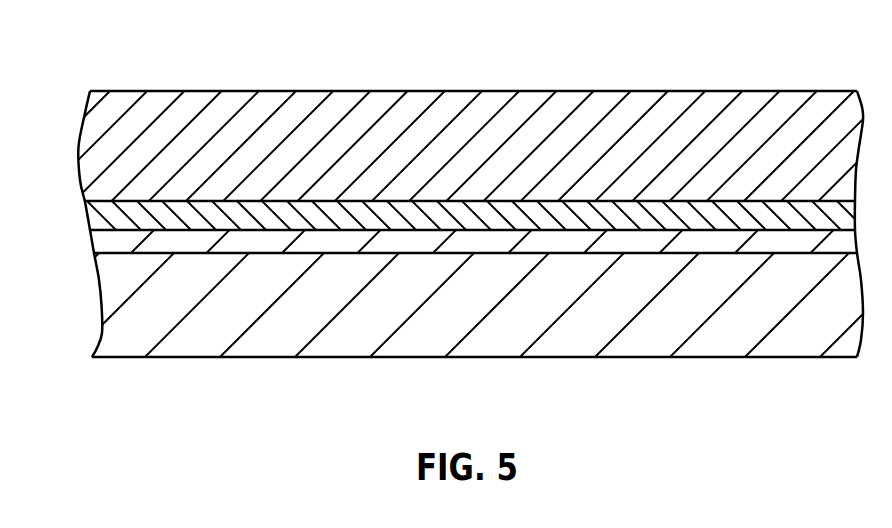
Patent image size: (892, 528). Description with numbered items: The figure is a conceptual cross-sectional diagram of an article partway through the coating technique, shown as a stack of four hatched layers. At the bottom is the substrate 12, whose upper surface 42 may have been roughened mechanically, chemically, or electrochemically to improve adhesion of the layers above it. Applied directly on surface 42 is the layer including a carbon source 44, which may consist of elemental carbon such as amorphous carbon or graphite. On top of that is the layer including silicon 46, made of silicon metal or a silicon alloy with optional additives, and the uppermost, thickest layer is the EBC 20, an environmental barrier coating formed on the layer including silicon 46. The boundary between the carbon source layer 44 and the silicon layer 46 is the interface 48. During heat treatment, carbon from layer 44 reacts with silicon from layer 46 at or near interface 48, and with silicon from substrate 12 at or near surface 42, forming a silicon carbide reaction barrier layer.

The substrate 12 is at (113, 301).
The EBC 20 is at (85, 146).
The surface 42 is at (485, 253).
The layer including a carbon source 44 is at (108, 244).
The layer including silicon 46 is at (105, 218).
The interface 48 is at (354, 230).